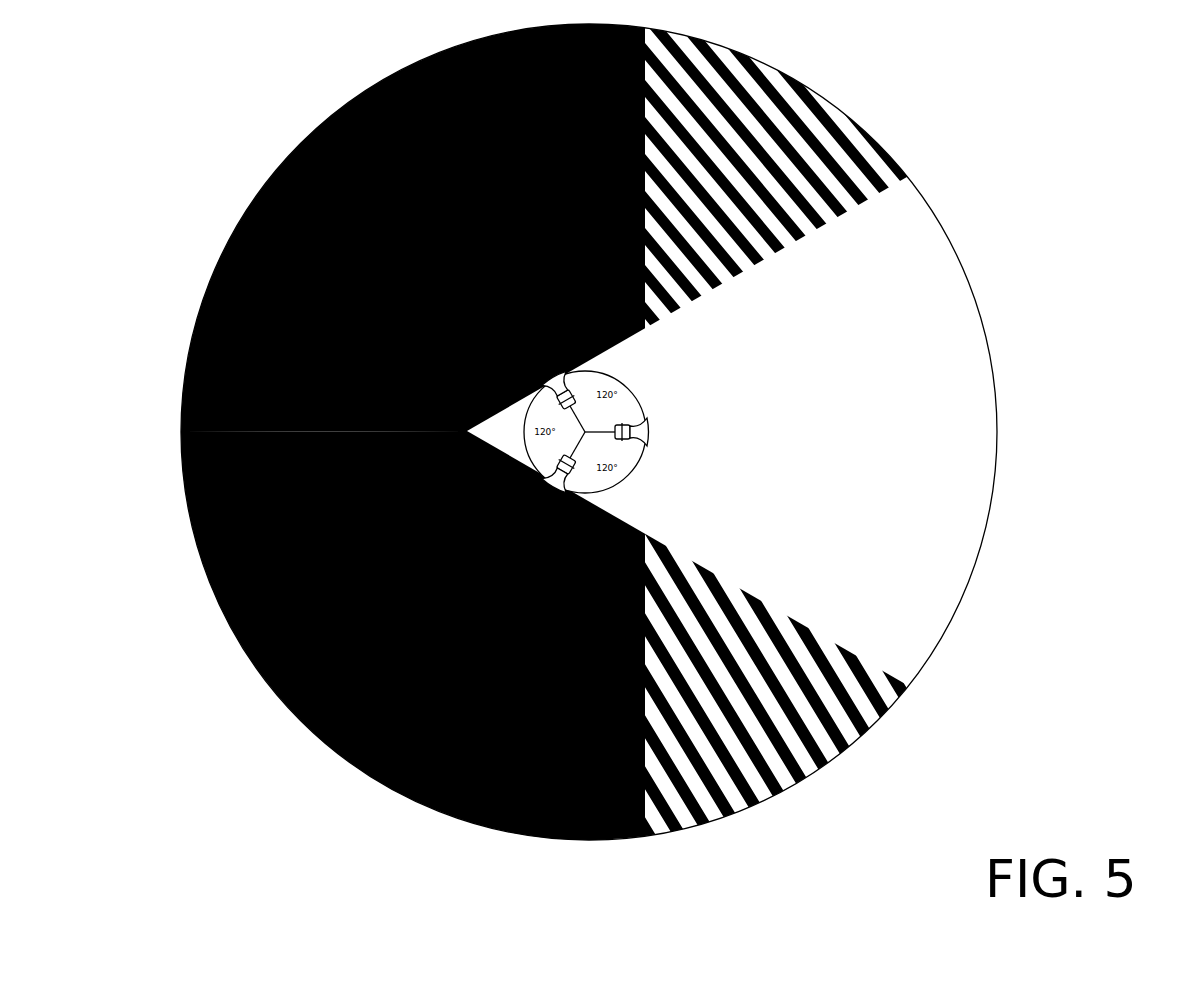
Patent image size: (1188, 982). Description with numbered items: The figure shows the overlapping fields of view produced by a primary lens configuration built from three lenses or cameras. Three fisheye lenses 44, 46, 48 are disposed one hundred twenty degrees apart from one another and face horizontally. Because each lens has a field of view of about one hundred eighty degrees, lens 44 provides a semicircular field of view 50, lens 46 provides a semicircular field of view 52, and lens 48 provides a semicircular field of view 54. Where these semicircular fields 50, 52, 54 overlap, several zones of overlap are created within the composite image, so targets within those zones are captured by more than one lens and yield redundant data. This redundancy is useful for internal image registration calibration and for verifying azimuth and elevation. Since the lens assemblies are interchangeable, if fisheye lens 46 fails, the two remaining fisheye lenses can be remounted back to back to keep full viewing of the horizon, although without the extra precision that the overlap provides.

The fisheye lens 44 is at (550, 480).
The fisheye lens 46 is at (550, 378).
The fisheye lens 48 is at (650, 432).
The semicircular field of view 50 is at (287, 706).
The semicircular field of view 52 is at (283, 160).
The semicircular field of view 54 is at (1000, 437).